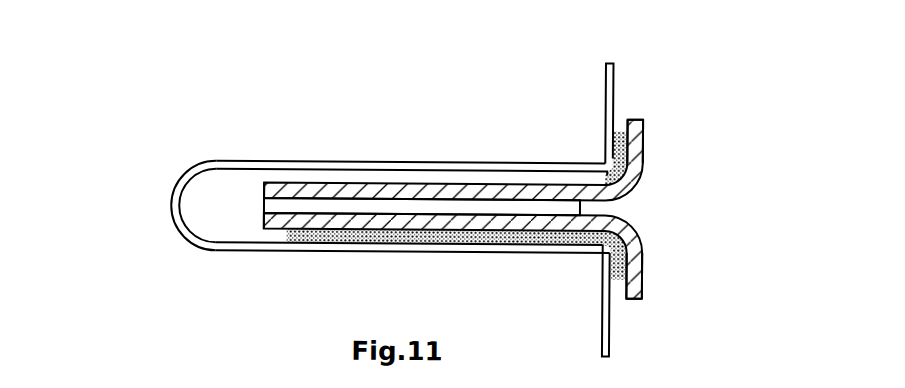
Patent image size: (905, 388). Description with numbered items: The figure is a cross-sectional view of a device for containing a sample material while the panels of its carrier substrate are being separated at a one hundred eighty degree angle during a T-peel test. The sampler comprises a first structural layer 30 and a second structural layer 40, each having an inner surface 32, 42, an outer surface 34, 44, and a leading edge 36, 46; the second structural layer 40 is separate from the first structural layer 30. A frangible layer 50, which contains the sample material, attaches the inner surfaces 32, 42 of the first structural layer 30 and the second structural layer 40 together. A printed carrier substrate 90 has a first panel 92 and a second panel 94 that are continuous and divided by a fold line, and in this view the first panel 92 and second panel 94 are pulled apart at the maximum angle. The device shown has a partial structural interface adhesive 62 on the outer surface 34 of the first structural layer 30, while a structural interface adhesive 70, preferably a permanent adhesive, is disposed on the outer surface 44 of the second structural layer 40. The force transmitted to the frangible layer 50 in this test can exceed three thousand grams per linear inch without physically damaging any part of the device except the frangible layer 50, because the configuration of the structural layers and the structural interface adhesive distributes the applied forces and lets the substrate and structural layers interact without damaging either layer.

The first structural layer 30 is at (330, 194).
The inner surface 32 is at (628, 116).
The outer surface 34 is at (643, 147).
The leading edge 36 is at (641, 117).
The second structural layer 40 is at (332, 218).
The inner surface 42 is at (642, 275).
The outer surface 44 is at (621, 292).
The leading edge 46 is at (636, 297).
The frangible layer 50 is at (463, 205).
The partial structural interface adhesive 62 is at (605, 161).
The structural interface adhesive 70 is at (383, 235).
The printed carrier substrate 90 is at (603, 70).
The first panel 92 is at (470, 163).
The second panel 94 is at (233, 242).